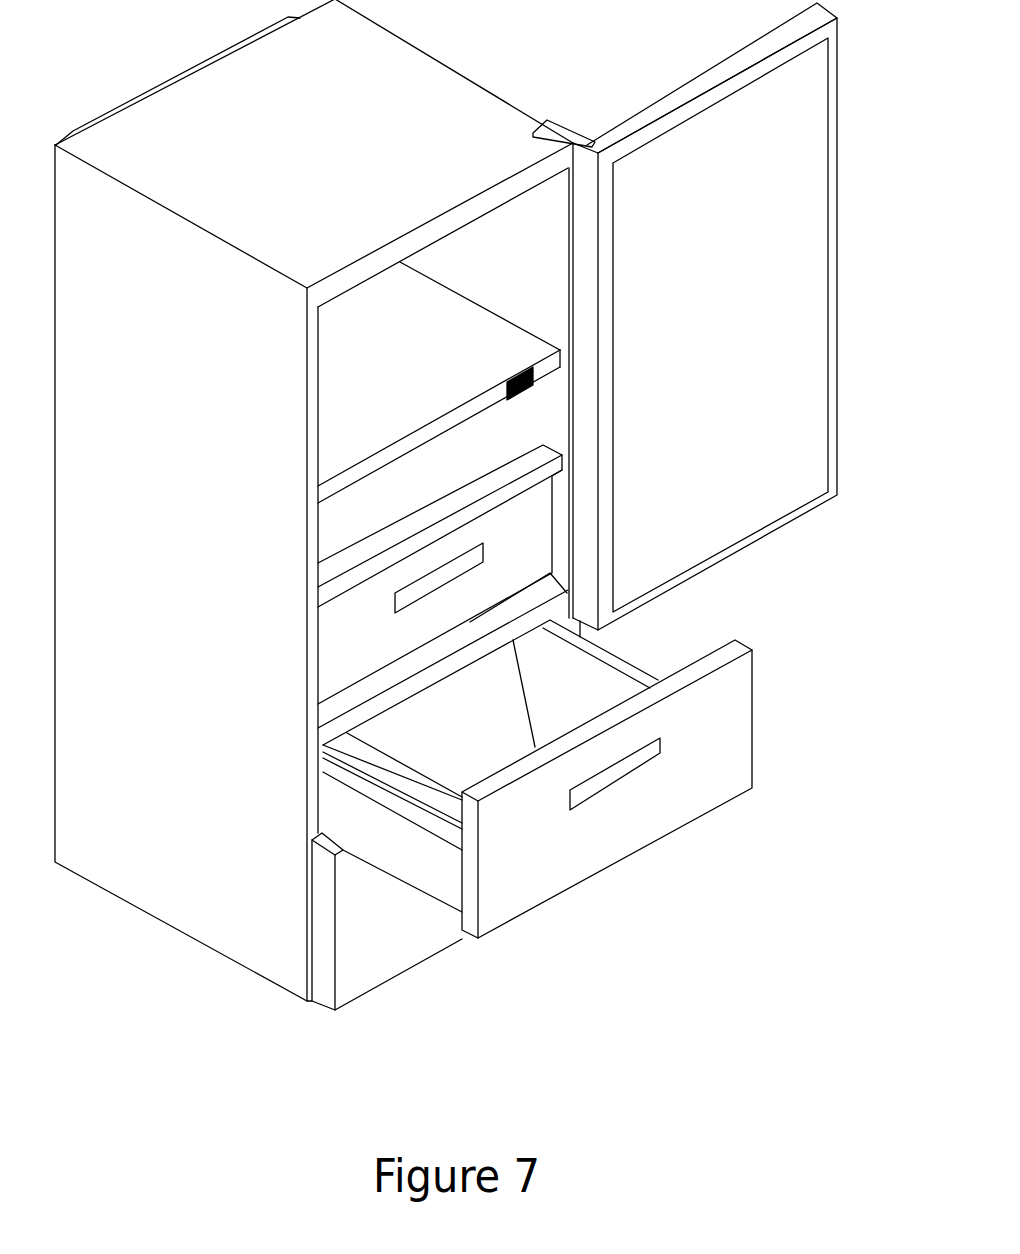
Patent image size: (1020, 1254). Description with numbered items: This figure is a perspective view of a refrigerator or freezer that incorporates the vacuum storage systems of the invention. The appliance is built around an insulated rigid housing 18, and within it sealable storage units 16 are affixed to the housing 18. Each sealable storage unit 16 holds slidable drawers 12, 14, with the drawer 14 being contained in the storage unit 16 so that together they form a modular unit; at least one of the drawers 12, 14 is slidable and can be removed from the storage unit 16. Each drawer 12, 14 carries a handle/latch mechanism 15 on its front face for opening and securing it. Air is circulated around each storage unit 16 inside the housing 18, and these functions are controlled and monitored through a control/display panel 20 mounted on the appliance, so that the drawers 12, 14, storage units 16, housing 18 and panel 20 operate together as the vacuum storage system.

The slidable drawer 12 is at (540, 424).
The slidable drawer 14 is at (540, 504).
The handle/latch mechanism 15 is at (483, 553).
The sealable storage unit 16 is at (335, 418).
The insulated rigid housing 18 is at (402, 57).
The control/display panel 20 is at (535, 380).